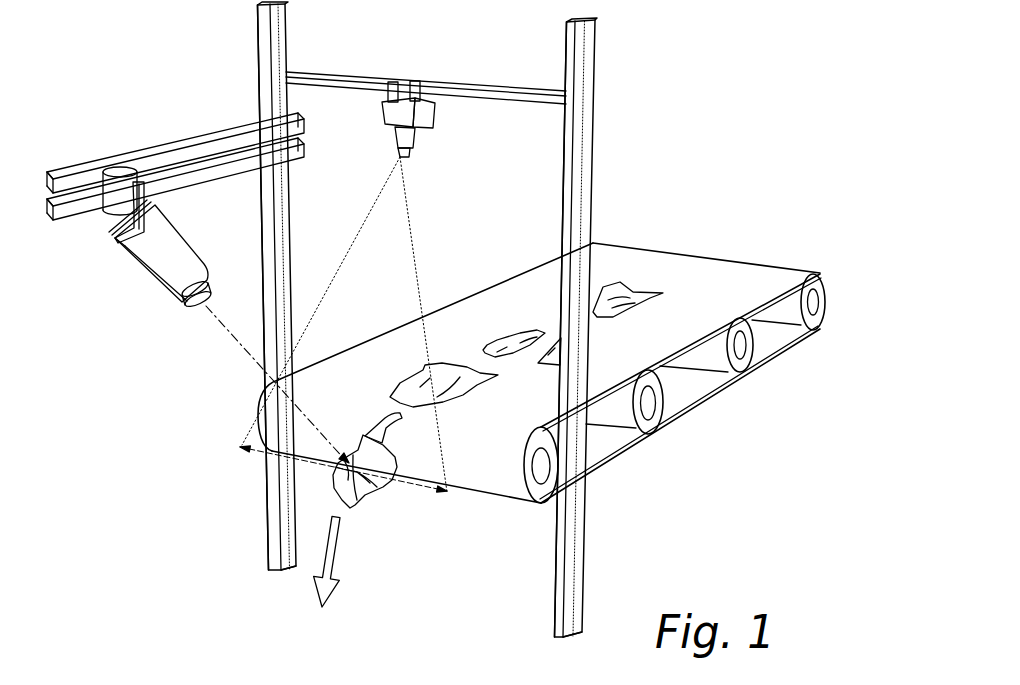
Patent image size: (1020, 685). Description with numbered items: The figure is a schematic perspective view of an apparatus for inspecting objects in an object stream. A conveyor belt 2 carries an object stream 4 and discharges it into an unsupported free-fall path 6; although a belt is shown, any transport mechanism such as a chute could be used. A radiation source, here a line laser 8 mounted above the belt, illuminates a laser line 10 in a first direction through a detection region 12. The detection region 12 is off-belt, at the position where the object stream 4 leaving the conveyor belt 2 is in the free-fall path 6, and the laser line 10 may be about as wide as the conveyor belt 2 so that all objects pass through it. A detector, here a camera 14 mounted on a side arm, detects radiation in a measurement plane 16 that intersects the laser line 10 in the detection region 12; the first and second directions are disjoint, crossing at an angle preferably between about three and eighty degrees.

The conveyor belt 2 is at (500, 476).
The object stream 4 is at (368, 434).
The free-fall path 6 is at (328, 560).
The line laser 8 is at (415, 137).
The laser line 10 is at (415, 258).
The detection region 12 is at (353, 503).
The camera 14 is at (153, 284).
The measurement plane 16 is at (240, 338).